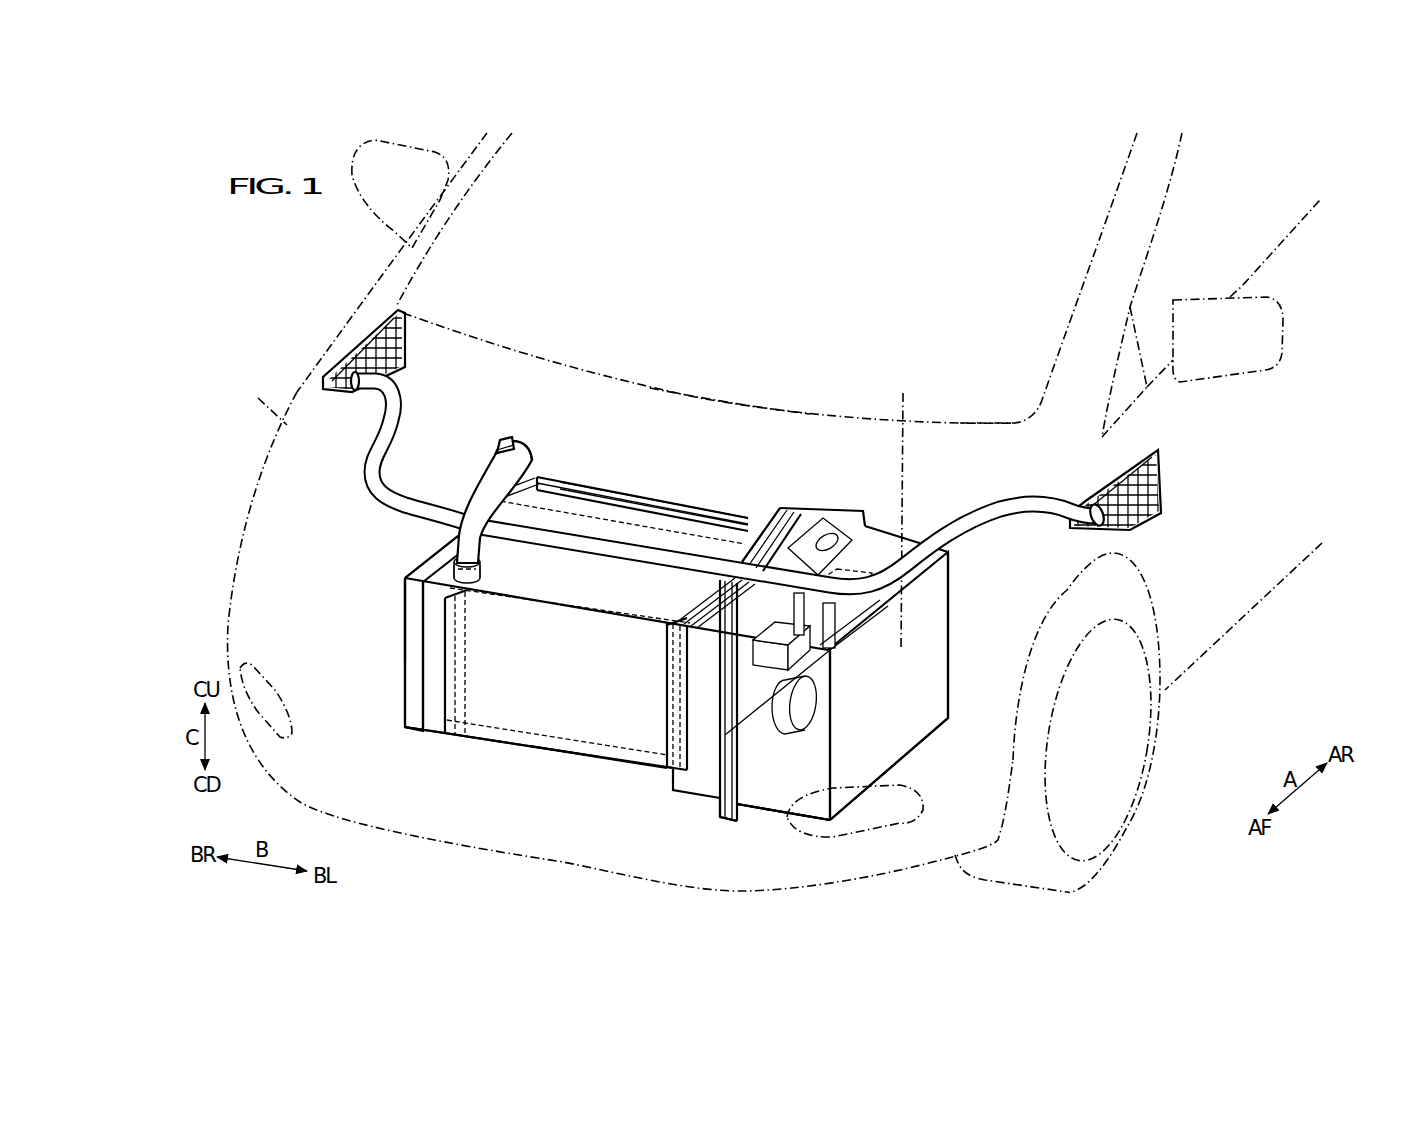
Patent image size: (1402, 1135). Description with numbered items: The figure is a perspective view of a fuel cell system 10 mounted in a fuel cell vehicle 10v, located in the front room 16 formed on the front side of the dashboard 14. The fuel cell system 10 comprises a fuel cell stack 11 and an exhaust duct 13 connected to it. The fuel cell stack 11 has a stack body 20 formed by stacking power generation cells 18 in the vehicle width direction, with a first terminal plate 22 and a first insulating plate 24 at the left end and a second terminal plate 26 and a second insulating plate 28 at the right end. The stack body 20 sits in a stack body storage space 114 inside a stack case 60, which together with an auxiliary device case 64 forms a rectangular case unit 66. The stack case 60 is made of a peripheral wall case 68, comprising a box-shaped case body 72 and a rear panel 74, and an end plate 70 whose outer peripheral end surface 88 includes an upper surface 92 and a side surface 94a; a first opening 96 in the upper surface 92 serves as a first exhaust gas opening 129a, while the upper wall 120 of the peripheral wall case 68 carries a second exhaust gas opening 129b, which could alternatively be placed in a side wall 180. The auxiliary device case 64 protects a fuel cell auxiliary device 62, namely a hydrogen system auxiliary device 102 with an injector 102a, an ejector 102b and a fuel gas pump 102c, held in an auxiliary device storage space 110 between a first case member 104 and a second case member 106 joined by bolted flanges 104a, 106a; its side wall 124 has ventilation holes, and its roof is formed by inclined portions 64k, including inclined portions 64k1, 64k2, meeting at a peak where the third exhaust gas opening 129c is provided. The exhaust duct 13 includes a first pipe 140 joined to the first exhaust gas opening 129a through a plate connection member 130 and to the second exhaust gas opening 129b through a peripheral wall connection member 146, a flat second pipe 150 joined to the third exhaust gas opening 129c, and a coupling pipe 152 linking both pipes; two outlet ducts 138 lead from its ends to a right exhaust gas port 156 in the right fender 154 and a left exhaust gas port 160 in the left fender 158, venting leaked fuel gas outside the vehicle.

The fuel cell system 10 is at (550, 392).
The fuel cell vehicle 10v is at (316, 238).
The fuel cell stack 11 is at (648, 480).
The exhaust duct 13 is at (696, 479).
The dashboard 14 is at (700, 410).
The front room 16 is at (907, 510).
The power generation cells 18 is at (630, 520).
The stack body 20 is at (596, 581).
The first terminal plate 22 is at (668, 662).
The first insulating plate 24 is at (683, 690).
The second terminal plate 26 is at (463, 656).
The second insulating plate 28 is at (447, 634).
The stack case 60 is at (758, 513).
The fuel cell auxiliary device 62 is at (896, 664).
The auxiliary device case 64 is at (822, 513).
The inclined portions 64k is at (848, 518).
The inclined portion 64k1 is at (750, 520).
The inclined portion 64k2 is at (910, 543).
The case unit 66 is at (803, 497).
The peripheral wall case 68 is at (492, 753).
The end plate 70 is at (410, 715).
The case body 72 is at (550, 747).
The rear panel 74 is at (565, 487).
The outer peripheral end surface 88 is at (386, 598).
The upper surface 92 is at (427, 570).
The side surface 94a is at (417, 600).
The first opening 96 is at (508, 488).
The hydrogen system auxiliary device 102 is at (896, 664).
The injector 102a is at (857, 610).
The ejector 102b is at (813, 660).
The fuel gas pump 102c is at (813, 726).
The first case member 104 is at (688, 792).
The flange 104a is at (716, 806).
The second case member 106 is at (777, 788).
The flange 106a is at (742, 817).
The auxiliary device storage space 110 is at (883, 753).
The stack body storage space 114 is at (437, 720).
The upper wall 120 is at (600, 518).
The side wall 124 is at (808, 780).
The first exhaust gas opening 129a is at (514, 489).
The second exhaust gas opening 129b is at (458, 562).
The third exhaust gas opening 129c is at (833, 540).
The plate connection member 130 is at (500, 427).
The outlet ducts 138 is at (378, 477).
The first pipe 140 is at (505, 487).
The peripheral wall connection member 146 is at (482, 572).
The second pipe 150 is at (815, 557).
The coupling pipe 152 is at (647, 553).
The right fender 154 is at (256, 401).
The right exhaust gas port 156 is at (387, 330).
The left fender 158 is at (1162, 535).
The left exhaust gas port 160 is at (1163, 477).
The side wall 180 is at (600, 727).